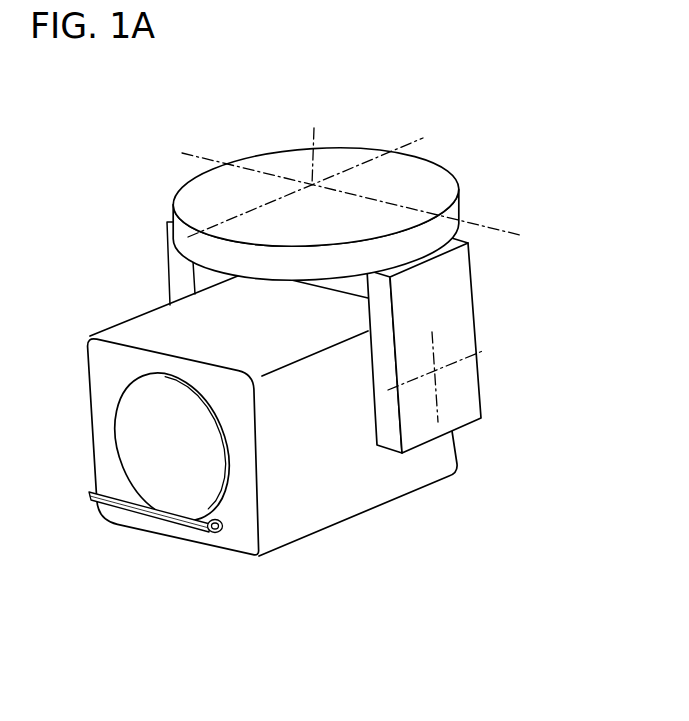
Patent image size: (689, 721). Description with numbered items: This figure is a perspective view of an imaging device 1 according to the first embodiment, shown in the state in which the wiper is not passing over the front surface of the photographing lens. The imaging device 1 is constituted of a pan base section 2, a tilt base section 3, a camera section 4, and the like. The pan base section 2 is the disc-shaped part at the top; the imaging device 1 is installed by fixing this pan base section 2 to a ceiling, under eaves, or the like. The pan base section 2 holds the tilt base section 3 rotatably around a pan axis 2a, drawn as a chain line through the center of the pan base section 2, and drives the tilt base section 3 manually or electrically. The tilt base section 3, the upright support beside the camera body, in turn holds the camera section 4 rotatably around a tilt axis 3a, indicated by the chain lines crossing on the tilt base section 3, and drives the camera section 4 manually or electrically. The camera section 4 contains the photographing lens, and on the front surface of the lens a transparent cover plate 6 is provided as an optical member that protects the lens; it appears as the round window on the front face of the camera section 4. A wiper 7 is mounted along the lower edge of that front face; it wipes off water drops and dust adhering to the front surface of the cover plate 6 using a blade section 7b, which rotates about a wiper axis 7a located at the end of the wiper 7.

The imaging device 1 is at (301, 359).
The pan base section 2 is at (345, 189).
The pan axis 2a is at (316, 142).
The tilt base section 3 is at (465, 344).
The tilt axis 3a is at (438, 371).
The camera section 4 is at (368, 510).
The cover plate 6 is at (191, 464).
The wiper 7 is at (131, 558).
The wiper axis 7a is at (208, 530).
The blade section 7b is at (178, 500).